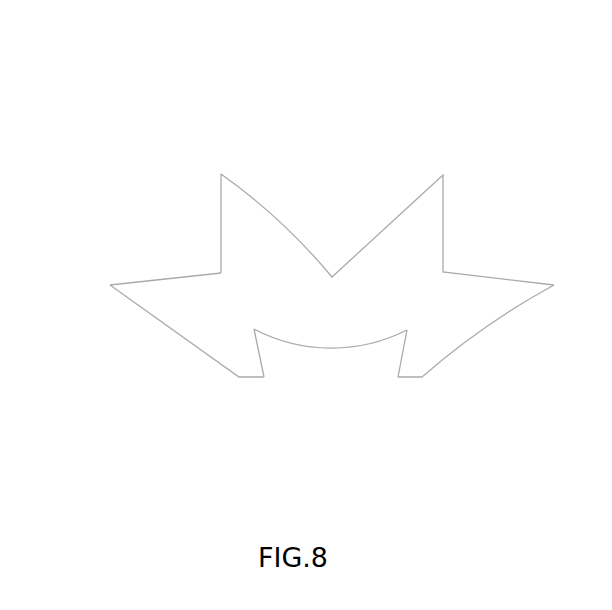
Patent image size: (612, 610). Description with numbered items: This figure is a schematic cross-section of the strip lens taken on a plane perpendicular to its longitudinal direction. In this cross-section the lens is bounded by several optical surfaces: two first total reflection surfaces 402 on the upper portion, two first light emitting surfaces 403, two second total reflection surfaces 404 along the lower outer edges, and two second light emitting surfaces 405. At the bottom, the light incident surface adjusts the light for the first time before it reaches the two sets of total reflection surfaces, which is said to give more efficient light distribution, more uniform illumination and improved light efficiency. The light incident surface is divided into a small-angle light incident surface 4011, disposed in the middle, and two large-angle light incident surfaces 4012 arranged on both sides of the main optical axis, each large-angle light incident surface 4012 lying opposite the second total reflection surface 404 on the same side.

The first total reflection surface 402 is at (279, 226).
The first light emitting surface 403 is at (221, 224).
The second total reflection surface 404 is at (178, 330).
The second light emitting surface 405 is at (163, 278).
The small-angle light incident surface 4011 is at (330, 348).
The large-angle light incident surface 4012 is at (260, 353).